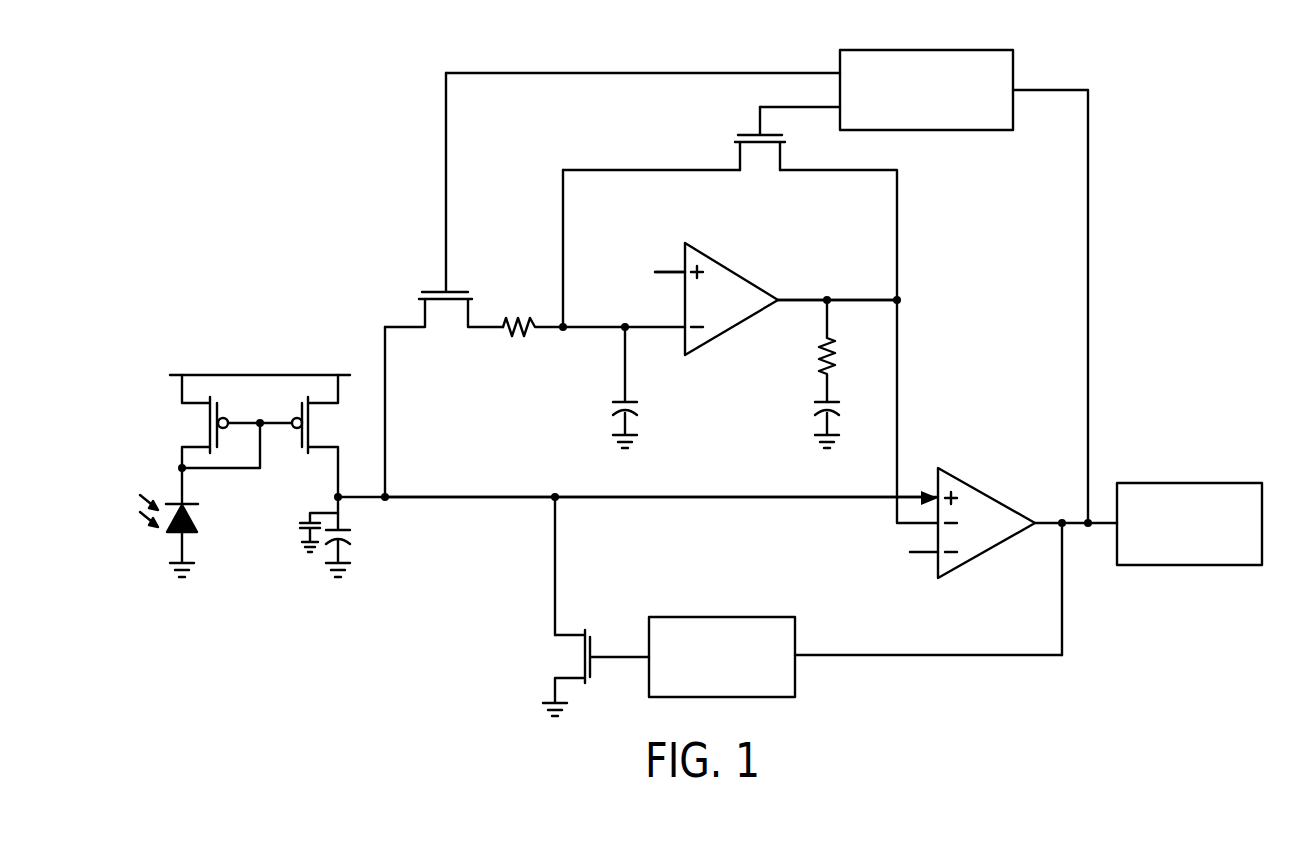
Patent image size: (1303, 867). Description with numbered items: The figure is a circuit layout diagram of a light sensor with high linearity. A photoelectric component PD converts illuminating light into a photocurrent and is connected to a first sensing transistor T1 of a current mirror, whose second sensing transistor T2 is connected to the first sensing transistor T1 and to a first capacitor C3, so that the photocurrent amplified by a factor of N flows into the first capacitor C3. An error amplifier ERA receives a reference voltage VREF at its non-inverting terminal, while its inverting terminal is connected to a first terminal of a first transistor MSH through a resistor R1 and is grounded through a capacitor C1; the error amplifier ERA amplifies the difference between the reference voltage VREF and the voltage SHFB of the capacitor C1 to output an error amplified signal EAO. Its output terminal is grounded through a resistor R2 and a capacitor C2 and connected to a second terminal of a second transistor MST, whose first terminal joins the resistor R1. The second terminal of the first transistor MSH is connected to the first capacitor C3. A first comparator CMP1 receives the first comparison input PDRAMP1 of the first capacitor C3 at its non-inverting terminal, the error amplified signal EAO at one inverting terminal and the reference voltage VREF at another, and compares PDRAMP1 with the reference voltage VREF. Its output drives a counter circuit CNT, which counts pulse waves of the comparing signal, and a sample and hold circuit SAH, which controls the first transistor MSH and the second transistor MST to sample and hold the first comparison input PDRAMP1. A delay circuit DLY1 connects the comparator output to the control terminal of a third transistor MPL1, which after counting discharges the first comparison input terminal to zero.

The first sensing transistor T1 is at (217, 421).
The second sensing transistor T2 is at (331, 436).
The photoelectric component PD is at (189, 522).
The first capacitor C3 is at (343, 537).
The first transistor MSH is at (444, 218).
The resistor R1 is at (533, 311).
The voltage of the capacitor C1 SHFB is at (624, 310).
The reference voltage VREF is at (744, 412).
The capacitor C1 is at (643, 387).
The error amplifier ERA is at (732, 272).
The error amplified signal EAO is at (837, 283).
The resistor R2 is at (848, 351).
The capacitor C2 is at (846, 423).
The second transistor MST is at (759, 157).
The sample and hold circuit SAH is at (1013, 68).
The first comparator CMP1 is at (988, 495).
The counter circuit CNT is at (1188, 483).
The first comparison input PDRAMP1 is at (653, 515).
The third transistor MPL1 is at (563, 673).
The delay circuit DLY1 is at (795, 670).